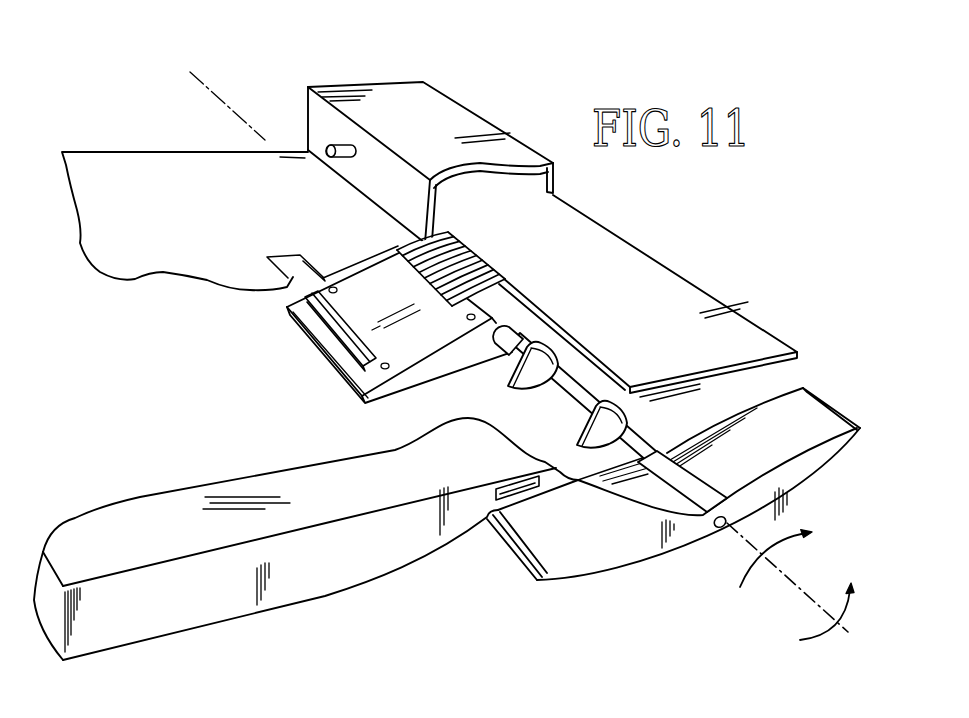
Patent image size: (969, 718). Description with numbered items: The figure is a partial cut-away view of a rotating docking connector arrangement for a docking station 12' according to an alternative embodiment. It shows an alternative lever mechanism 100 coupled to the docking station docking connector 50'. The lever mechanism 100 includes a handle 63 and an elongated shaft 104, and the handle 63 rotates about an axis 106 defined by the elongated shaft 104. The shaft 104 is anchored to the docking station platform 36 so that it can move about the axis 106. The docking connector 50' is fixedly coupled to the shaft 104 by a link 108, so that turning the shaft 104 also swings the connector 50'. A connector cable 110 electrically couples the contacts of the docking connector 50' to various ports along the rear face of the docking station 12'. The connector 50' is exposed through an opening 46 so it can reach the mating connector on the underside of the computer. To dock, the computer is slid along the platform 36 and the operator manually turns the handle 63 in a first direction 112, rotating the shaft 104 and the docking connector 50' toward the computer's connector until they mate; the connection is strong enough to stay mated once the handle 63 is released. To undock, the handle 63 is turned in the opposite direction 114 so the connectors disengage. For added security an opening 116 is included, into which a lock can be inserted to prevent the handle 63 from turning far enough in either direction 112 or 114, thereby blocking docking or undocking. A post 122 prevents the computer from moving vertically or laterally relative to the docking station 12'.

The docking station 12' is at (429, 202).
The post 122 is at (349, 144).
The opening 46 is at (288, 257).
The connector cable 110 is at (469, 253).
The docking connector 50' is at (389, 323).
The link 108 is at (457, 353).
The elongated shaft 104 is at (558, 387).
The lever mechanism 100 is at (699, 422).
The platform 36 is at (163, 500).
The opening 116 is at (493, 489).
The handle 63 is at (822, 465).
The first direction 112 is at (783, 543).
The axis 106 is at (810, 598).
The opposite direction 114 is at (840, 613).